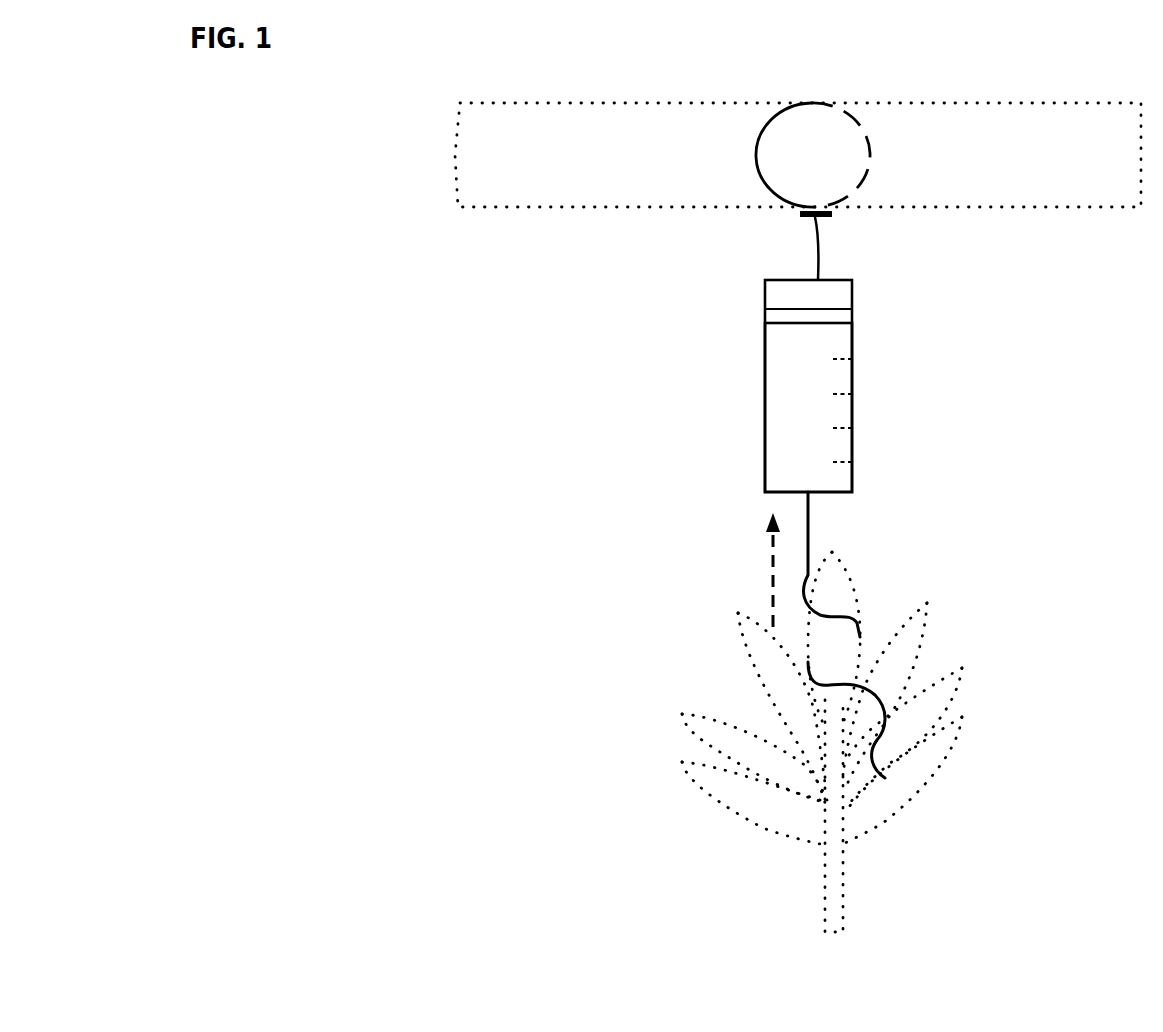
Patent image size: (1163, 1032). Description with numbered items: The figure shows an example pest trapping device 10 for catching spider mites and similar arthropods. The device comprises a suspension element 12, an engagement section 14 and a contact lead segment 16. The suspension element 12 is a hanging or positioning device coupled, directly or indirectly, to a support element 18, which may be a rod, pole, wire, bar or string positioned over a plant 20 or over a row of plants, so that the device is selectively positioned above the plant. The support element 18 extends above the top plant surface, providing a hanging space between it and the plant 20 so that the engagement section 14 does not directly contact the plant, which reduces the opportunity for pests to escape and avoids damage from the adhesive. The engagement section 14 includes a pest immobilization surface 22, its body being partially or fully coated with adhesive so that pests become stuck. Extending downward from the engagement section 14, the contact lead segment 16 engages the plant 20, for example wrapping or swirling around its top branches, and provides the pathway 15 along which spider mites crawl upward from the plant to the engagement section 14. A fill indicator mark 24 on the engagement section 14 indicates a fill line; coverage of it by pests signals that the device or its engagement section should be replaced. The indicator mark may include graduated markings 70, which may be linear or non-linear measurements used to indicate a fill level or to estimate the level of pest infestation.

The pest trapping device 10 is at (651, 50).
The suspension element 12 is at (778, 222).
The engagement section 14 is at (755, 357).
The pathway 15 is at (768, 550).
The contact lead segment 16 is at (832, 531).
The support element 18 is at (455, 188).
The plant 20 is at (732, 598).
The pest immobilization surface 22 is at (819, 426).
The fill indicator mark 24 is at (852, 316).
The graduated markings 70 is at (852, 393).